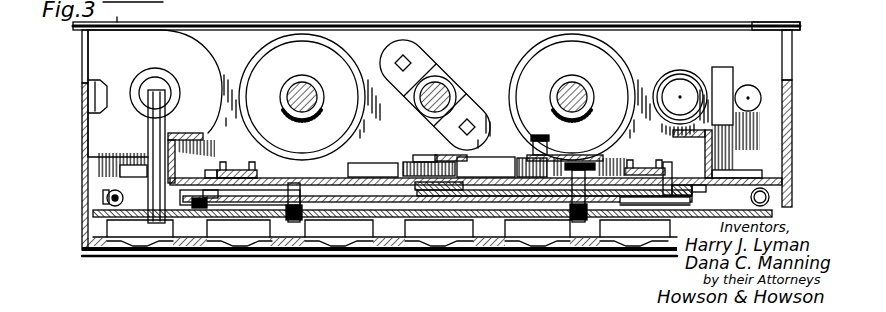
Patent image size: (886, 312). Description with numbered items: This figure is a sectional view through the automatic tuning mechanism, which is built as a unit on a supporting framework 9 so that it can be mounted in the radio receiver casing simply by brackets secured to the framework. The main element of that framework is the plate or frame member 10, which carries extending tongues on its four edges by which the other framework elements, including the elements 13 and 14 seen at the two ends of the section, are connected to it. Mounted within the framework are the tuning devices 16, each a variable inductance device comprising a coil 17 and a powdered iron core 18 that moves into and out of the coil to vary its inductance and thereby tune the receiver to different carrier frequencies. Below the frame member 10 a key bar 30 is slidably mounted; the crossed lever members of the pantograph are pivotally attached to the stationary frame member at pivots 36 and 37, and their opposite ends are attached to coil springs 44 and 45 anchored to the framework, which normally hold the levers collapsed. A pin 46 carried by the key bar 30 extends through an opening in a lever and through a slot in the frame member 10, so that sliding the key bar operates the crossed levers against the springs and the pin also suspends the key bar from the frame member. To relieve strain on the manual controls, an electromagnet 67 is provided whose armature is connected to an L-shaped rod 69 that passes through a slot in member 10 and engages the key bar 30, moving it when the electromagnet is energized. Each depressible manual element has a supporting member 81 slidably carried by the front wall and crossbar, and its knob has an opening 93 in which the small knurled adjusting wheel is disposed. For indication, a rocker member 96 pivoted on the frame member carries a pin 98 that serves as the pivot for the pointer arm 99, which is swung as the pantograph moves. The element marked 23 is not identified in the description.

The supporting framework 9 is at (781, 22).
The opening 93 is at (218, 1).
The framework element 13 is at (83, 118).
The framework element 14 is at (791, 80).
The electromagnet 67 is at (200, 62).
The L-shaped rod 69 is at (148, 127).
The tuning device 16 is at (352, 60).
The movable core 18 is at (450, 96).
The coil 17 is at (443, 88).
The plate or frame member 10 is at (376, 175).
The bracket 23 is at (245, 160).
The pivot 36 is at (205, 177).
The pointer arm 99 is at (530, 152).
The pin 98 is at (540, 135).
The rocker member 96 is at (562, 160).
The pivot 37 is at (672, 175).
The pin 46 is at (293, 194).
The coil spring 44 is at (88, 202).
The coil spring 45 is at (751, 197).
The key bar 30 is at (493, 219).
The supporting member 81 is at (107, 252).